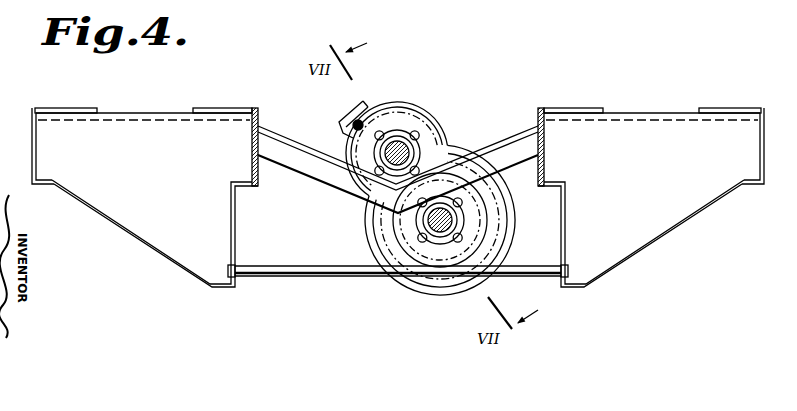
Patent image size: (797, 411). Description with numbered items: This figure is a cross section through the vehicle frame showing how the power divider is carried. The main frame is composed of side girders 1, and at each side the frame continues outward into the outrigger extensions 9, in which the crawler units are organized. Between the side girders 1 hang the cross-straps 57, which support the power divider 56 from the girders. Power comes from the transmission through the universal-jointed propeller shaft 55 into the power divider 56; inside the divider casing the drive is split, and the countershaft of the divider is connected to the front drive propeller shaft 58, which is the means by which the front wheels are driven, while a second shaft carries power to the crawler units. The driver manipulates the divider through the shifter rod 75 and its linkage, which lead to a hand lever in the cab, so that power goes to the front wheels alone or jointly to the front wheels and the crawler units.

The side girder 1 is at (258, 111).
The outrigger extension 9 is at (32, 116).
The propeller shaft 55 is at (419, 148).
The power divider 56 is at (432, 113).
The cross-strap 57 is at (317, 180).
The front drive propeller shaft 58 is at (429, 225).
The shifter rod 75 is at (364, 113).